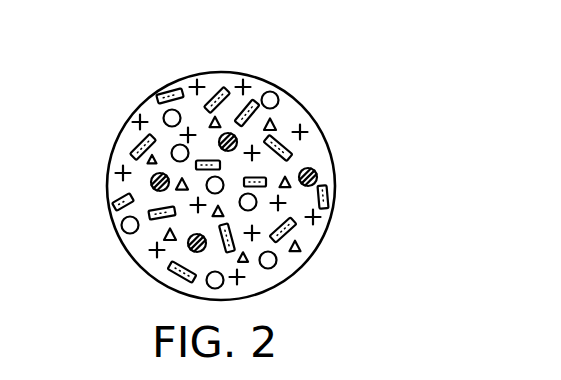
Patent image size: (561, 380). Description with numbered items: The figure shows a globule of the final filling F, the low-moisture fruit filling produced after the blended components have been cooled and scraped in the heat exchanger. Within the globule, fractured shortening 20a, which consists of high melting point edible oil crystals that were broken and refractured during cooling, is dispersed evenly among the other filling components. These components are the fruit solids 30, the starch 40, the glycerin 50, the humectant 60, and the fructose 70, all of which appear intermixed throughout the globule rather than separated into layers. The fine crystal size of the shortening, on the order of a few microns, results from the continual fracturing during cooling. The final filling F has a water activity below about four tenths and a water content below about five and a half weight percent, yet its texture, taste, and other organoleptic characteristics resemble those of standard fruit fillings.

The fractured shortening 20a is at (172, 89).
The fruit solids 30 is at (118, 171).
The starch 40 is at (122, 228).
The glycerin 50 is at (317, 175).
The humectant 60 is at (164, 238).
The fructose 70 is at (273, 120).
The final filling F is at (362, 125).